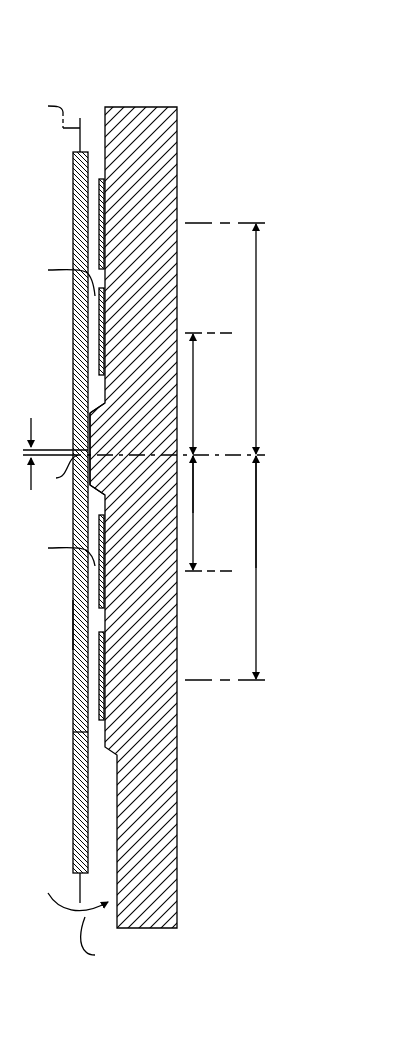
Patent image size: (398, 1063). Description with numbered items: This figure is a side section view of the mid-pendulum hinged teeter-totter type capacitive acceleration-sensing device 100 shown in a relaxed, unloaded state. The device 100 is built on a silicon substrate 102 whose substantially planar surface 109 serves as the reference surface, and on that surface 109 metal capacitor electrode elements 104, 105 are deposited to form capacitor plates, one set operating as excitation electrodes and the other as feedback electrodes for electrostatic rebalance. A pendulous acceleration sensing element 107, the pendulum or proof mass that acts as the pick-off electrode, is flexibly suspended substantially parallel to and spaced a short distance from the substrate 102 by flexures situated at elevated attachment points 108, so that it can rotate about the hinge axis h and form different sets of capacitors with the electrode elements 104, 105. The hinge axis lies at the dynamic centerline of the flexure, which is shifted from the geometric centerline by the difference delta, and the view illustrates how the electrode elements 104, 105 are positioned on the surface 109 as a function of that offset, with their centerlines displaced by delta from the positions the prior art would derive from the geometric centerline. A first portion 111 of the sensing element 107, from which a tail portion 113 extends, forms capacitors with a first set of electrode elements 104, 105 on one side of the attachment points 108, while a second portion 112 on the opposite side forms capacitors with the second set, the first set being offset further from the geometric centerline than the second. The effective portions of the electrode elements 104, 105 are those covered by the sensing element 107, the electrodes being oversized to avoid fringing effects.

The capacitive acceleration-sensing device 100 is at (76, 58).
The silicon substrate 102 is at (152, 107).
The electrode element 104 is at (99, 330).
The electrode element 105 is at (99, 232).
The pendulous acceleration sensing element 107 is at (73, 848).
The elevated attachment points 108 is at (147, 426).
The substantially planar surface 109 is at (103, 383).
The first portion 111 is at (73, 627).
The second portion 112 is at (73, 175).
The tail portion 113 is at (73, 782).